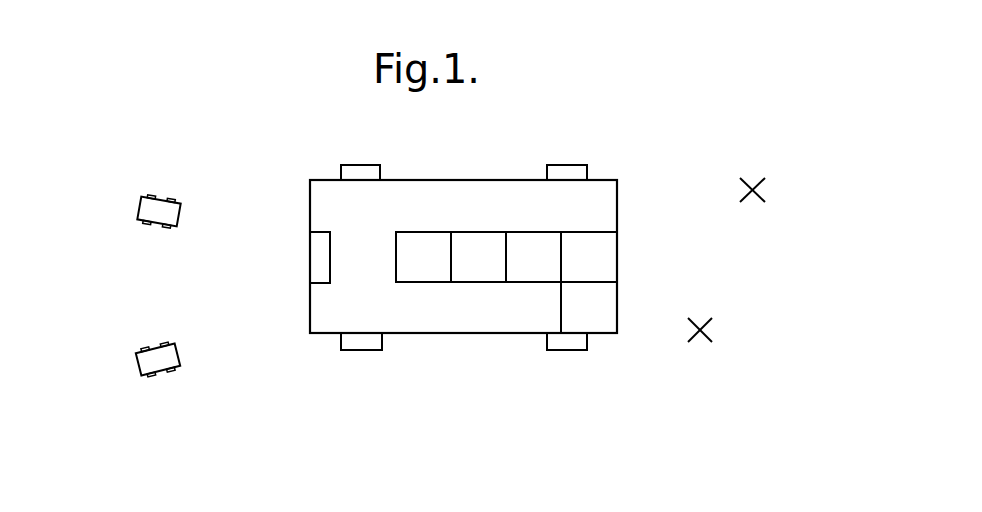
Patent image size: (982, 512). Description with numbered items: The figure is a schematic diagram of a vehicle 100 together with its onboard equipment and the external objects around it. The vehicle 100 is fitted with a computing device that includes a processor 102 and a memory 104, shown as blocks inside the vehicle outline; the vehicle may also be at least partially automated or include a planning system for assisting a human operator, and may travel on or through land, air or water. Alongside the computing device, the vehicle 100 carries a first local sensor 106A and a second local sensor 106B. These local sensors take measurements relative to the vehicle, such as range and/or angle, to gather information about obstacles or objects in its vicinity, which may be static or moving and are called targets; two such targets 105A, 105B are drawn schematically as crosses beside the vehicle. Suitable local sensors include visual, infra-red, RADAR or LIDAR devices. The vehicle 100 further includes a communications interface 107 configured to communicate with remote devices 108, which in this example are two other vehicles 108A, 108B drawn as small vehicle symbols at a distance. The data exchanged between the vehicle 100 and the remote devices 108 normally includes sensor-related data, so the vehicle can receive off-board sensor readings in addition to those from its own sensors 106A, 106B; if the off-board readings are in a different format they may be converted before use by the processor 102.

The vehicle 100 is at (449, 170).
The processor 102 is at (442, 266).
The memory 104 is at (496, 266).
The communications interface 107 is at (551, 266).
The first local sensor 106A is at (611, 266).
The second local sensor 106B is at (611, 320).
The remote devices 108 is at (311, 242).
The other vehicle 108A is at (133, 189).
The other vehicle 108B is at (130, 380).
The target 105A is at (717, 330).
The target 105B is at (749, 172).